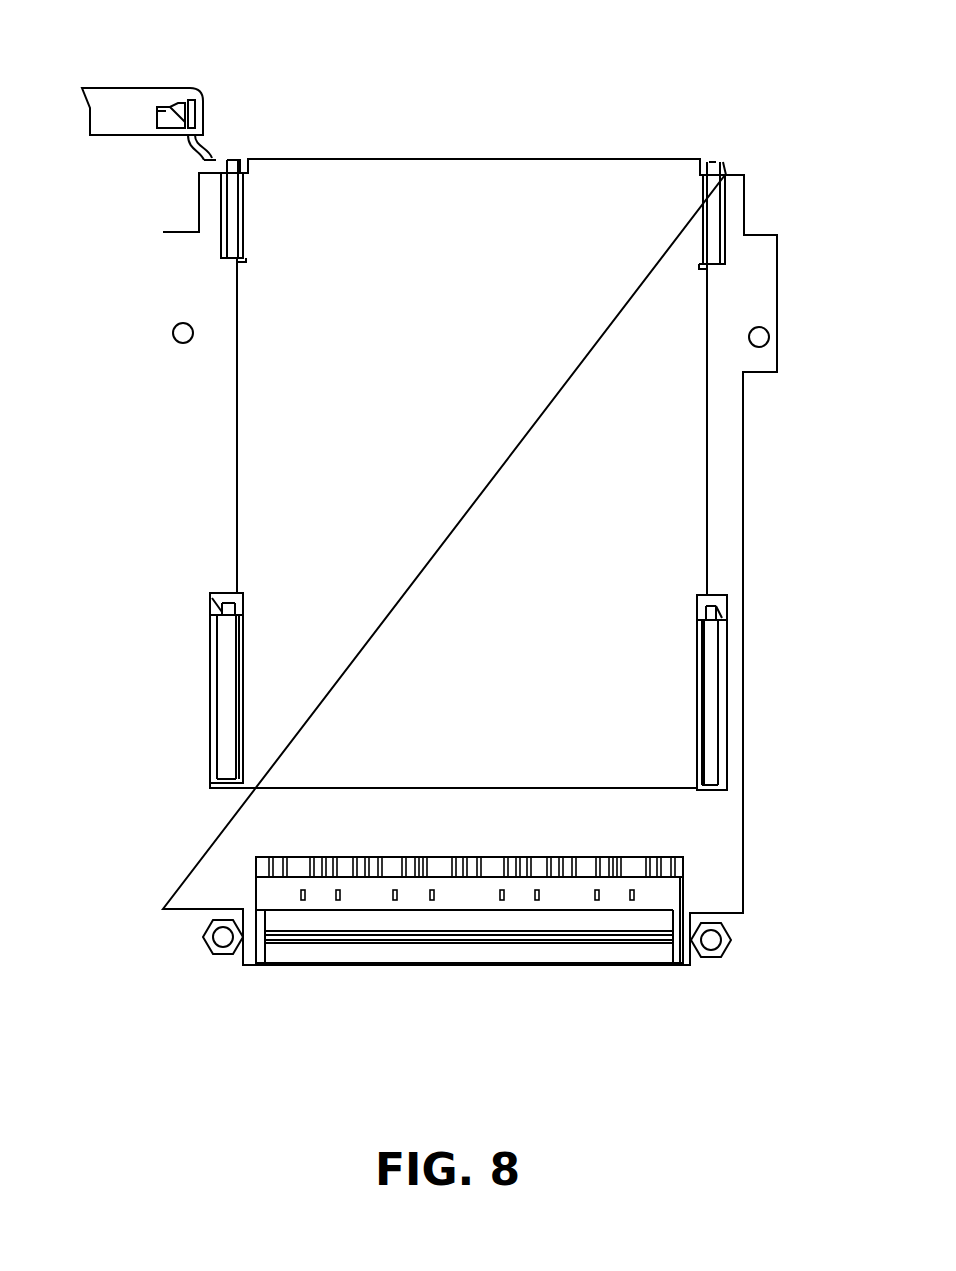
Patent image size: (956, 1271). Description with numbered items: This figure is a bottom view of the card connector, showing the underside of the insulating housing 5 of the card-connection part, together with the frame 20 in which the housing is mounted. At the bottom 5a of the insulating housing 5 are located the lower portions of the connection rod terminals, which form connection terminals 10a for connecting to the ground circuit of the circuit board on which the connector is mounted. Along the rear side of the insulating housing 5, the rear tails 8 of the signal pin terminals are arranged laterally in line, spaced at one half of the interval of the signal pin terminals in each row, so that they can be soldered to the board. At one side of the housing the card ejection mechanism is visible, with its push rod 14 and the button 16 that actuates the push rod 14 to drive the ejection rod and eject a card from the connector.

The frame 20 is at (538, 159).
The button 16 is at (132, 88).
The push rod 14 is at (203, 157).
The insulating housing 5 is at (670, 897).
The bottom of insulating housing 5a is at (280, 897).
The connection terminals 10a is at (388, 897).
The rear tail 8 is at (538, 943).